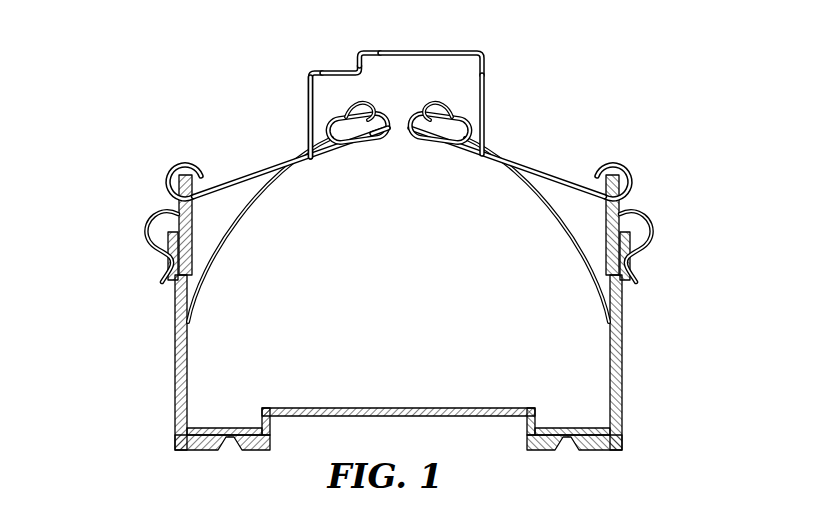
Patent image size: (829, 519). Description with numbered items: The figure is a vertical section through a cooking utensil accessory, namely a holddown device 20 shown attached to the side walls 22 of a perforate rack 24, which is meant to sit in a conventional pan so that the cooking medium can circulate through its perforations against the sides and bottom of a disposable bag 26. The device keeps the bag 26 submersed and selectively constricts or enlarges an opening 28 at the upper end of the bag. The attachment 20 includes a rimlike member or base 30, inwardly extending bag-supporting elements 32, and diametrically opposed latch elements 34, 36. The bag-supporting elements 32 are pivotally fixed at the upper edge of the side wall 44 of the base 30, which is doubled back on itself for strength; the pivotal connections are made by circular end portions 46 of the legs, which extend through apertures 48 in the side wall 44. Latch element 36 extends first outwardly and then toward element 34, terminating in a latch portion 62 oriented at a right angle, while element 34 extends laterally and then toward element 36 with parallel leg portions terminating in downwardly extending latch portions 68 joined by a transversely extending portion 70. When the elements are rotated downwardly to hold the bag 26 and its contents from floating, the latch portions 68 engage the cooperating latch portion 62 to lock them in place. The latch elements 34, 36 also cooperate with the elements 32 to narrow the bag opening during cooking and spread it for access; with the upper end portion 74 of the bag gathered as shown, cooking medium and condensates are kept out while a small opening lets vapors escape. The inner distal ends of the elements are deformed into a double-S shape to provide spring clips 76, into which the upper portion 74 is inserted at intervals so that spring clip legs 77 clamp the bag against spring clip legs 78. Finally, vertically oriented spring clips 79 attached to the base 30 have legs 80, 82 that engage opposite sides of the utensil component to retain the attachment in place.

The holddown device 20 is at (264, 142).
The side walls 22 is at (177, 347).
The perforate rack 24 is at (625, 327).
The disposable bag 26 is at (206, 378).
The opening 28 is at (397, 132).
The base 30 is at (172, 204).
The bag-supporting elements 32 is at (264, 165).
The latch element 34 is at (489, 83).
The latch element 36 is at (309, 112).
The side wall 44 is at (605, 233).
The circular end portions 46 is at (607, 167).
The apertures 48 is at (619, 206).
The latch portion 62 is at (368, 67).
The latch portions 68 is at (359, 55).
The transversely extending portion 70 is at (359, 77).
The upper end portion 74 is at (381, 110).
The spring clips 76 is at (434, 109).
The spring clip legs 77 is at (362, 115).
The spring clip legs 78 is at (349, 143).
The spring clips 79 is at (144, 242).
The leg 80 is at (167, 272).
The leg 82 is at (191, 254).